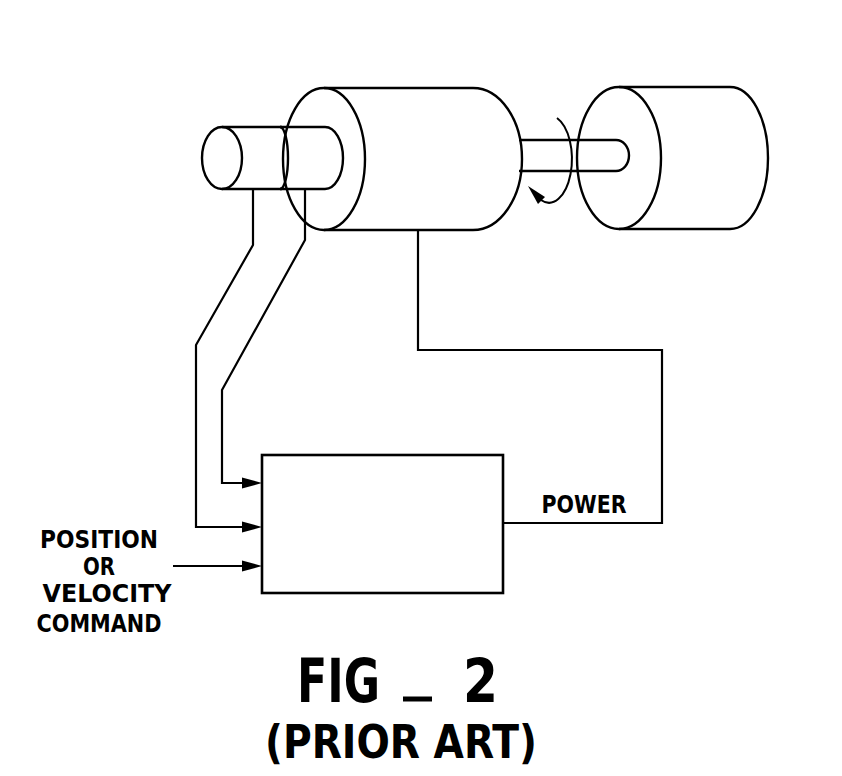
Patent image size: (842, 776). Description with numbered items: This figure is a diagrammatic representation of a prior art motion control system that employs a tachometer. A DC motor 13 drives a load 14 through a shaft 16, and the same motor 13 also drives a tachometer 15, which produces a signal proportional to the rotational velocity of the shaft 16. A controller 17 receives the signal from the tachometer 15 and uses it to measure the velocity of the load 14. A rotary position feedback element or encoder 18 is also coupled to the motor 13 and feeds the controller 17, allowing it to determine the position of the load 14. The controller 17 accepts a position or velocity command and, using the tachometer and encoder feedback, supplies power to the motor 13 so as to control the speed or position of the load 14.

The DC motor 13 is at (428, 88).
The load 14 is at (683, 87).
The tachometer 15 is at (302, 127).
The shaft 16 is at (543, 132).
The controller 17 is at (383, 455).
The rotary position feedback element or encoder 18 is at (242, 127).